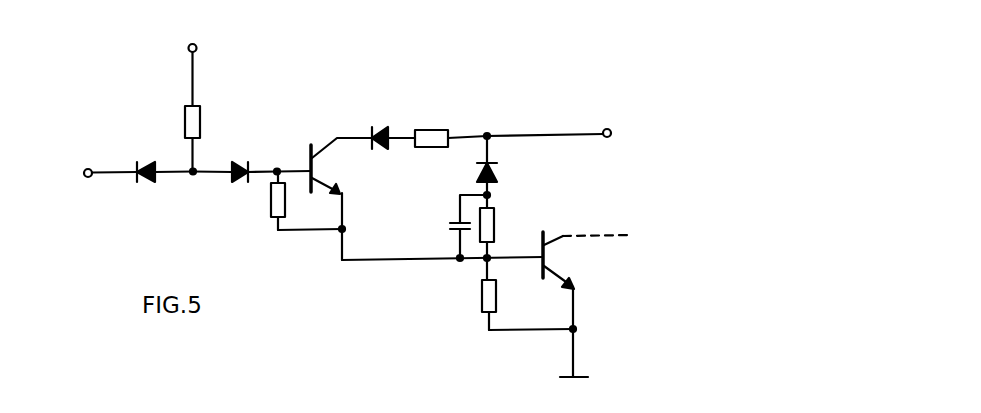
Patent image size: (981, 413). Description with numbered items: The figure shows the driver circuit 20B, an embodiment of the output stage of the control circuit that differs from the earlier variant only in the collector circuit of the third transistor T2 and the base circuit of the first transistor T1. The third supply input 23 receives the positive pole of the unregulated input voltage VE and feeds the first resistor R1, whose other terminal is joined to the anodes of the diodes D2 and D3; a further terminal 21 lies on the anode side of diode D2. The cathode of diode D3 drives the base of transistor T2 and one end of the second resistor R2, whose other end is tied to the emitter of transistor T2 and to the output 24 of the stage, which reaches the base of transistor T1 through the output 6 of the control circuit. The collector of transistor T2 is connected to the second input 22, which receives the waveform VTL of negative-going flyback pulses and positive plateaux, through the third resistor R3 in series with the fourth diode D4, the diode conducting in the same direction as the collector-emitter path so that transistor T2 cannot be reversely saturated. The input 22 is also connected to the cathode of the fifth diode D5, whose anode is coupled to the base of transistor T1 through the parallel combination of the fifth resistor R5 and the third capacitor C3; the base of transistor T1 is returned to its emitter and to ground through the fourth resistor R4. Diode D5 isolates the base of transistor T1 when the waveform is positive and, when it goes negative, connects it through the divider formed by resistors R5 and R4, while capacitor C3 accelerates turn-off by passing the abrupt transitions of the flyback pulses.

The first input 21 is at (89, 168).
The second input 22 is at (608, 128).
The third supply input 23 is at (188, 49).
The output 24 is at (485, 262).
The output of the control circuit 6 is at (540, 253).
The driver circuit 20B is at (307, 107).
The second diode D2 is at (148, 154).
The third diode D3 is at (238, 162).
The fourth diode D4 is at (378, 132).
The fifth diode D5 is at (497, 170).
The first resistor R1 is at (200, 131).
The second resistor R2 is at (271, 203).
The third resistor R3 is at (432, 130).
The fourth resistor R4 is at (482, 300).
The fifth resistor R5 is at (510, 224).
The third capacitor C3 is at (462, 230).
The first transistor T1 is at (542, 270).
The third transistor T2 is at (308, 157).
The input voltage VE is at (220, 44).
The voltage waveform − VTL is at (605, 145).